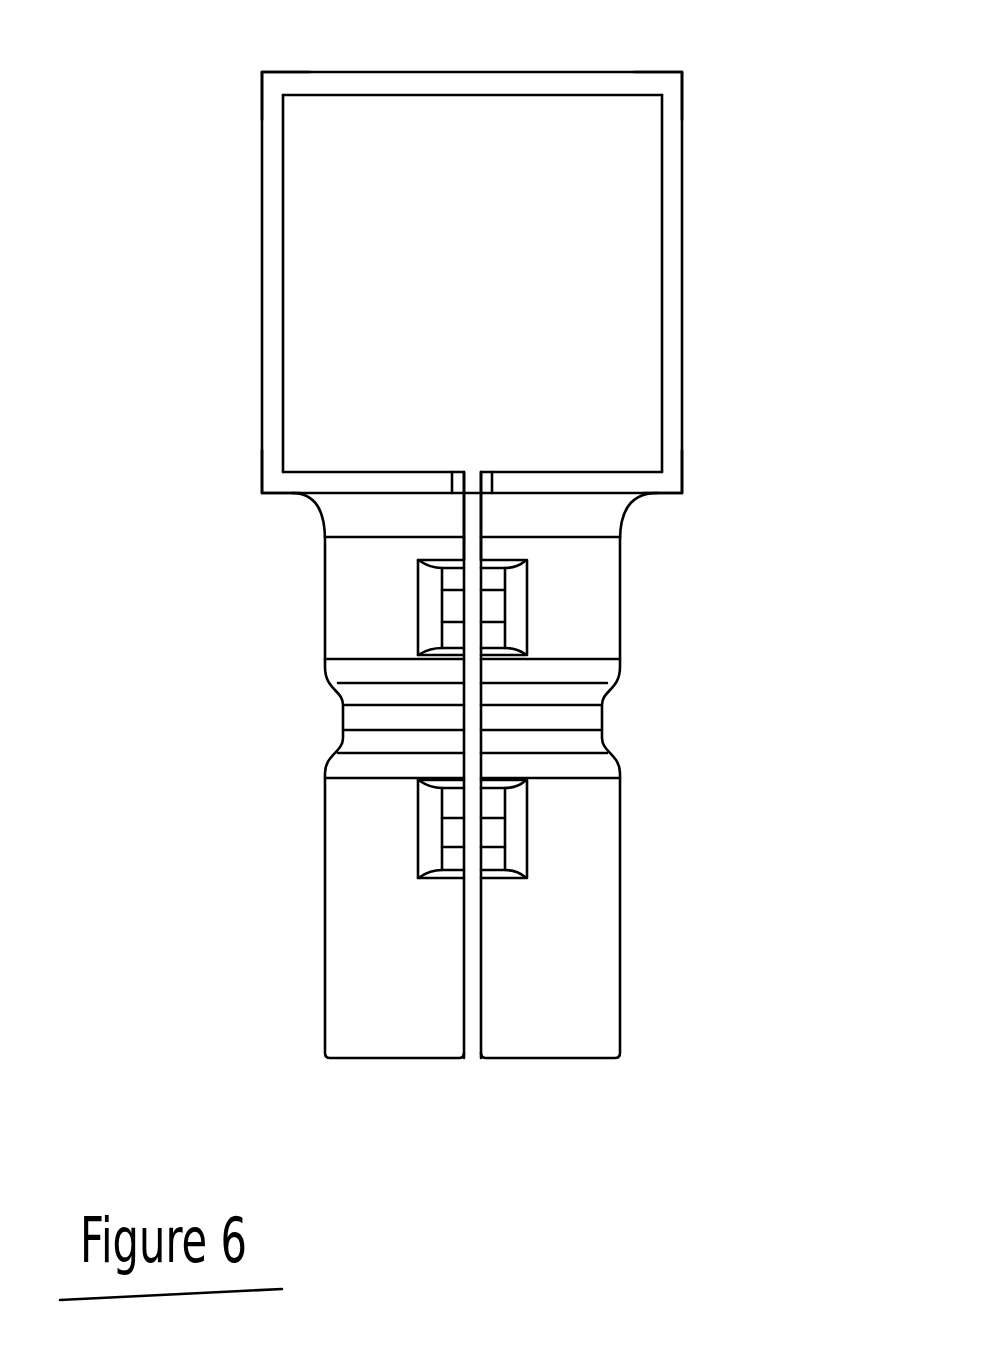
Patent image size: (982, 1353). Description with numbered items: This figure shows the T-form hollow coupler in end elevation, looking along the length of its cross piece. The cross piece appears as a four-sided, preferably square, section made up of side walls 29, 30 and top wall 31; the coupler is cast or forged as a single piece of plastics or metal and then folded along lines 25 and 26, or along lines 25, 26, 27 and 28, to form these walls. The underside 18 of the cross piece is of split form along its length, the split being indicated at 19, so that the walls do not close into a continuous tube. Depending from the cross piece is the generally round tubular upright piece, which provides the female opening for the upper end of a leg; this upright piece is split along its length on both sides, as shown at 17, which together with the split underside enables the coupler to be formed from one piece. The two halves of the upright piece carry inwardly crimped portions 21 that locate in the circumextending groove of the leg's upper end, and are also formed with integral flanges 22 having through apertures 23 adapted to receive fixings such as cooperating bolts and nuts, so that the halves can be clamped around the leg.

The split 17 is at (482, 1022).
The underside 18 is at (563, 480).
The split 19 is at (478, 488).
The inwardly crimped portion 21 is at (357, 722).
The integral flange 22 is at (448, 580).
The through aperture 23 is at (493, 843).
The fold line 25 is at (262, 72).
The fold line 26 is at (718, 18).
The fold line 27 is at (262, 494).
The fold line 28 is at (682, 493).
The side wall 29 is at (273, 258).
The side wall 30 is at (673, 247).
The top wall 31 is at (522, 80).